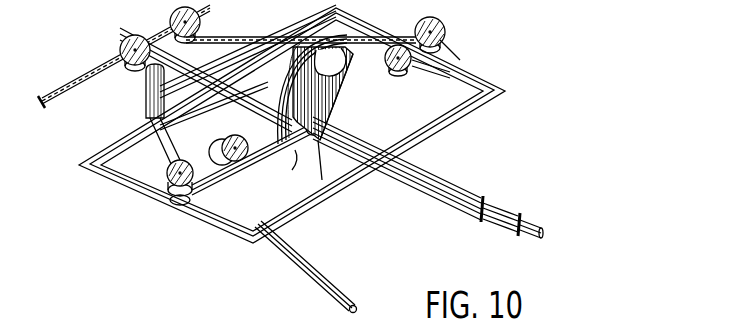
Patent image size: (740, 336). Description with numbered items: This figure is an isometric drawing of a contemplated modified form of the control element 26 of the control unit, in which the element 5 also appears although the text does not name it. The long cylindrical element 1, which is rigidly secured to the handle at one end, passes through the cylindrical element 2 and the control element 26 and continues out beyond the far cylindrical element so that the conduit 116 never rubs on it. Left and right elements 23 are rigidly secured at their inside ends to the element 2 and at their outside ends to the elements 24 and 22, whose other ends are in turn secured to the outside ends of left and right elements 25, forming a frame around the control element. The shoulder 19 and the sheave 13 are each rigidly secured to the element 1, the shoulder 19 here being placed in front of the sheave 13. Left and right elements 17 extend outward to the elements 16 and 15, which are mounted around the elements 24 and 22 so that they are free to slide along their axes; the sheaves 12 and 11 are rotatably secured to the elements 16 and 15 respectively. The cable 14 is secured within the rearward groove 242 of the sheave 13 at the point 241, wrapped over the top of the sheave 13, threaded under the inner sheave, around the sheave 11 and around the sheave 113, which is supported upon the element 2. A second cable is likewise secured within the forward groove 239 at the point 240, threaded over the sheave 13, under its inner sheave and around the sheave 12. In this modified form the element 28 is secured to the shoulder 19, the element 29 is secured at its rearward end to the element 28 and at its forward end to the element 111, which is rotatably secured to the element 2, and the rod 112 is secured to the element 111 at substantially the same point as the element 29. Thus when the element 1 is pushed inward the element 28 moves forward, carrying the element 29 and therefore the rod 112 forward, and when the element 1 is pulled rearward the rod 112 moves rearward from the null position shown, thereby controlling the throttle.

The long cylindrical element 1 is at (500, 230).
The cylindrical element 2 is at (134, 31).
The dome housing 5 is at (323, 103).
The sheave 11 is at (165, 206).
The sheave 12 is at (444, 20).
The sheave 13 is at (315, 170).
The cable 14 is at (74, 82).
The element 15 is at (178, 214).
The element 16 is at (454, 56).
The left and right elements 17 is at (358, 112).
The shoulder 19 is at (262, 124).
The element 22 is at (212, 231).
The left and right elements 23 is at (297, 33).
The element 24 is at (483, 74).
The left and right elements 25 is at (442, 128).
The control element 26 is at (624, 46).
The element 28 is at (300, 160).
The element 29 is at (200, 119).
The runner 111 is at (142, 90).
The rod or mechanical actuator 112 is at (320, 291).
The sheave 113 is at (118, 50).
The conduit 116 is at (531, 242).
The forward groove 239 is at (250, 55).
The securing point 240 is at (232, 82).
The securing point 241 is at (360, 72).
The rearward groove 242 is at (348, 100).